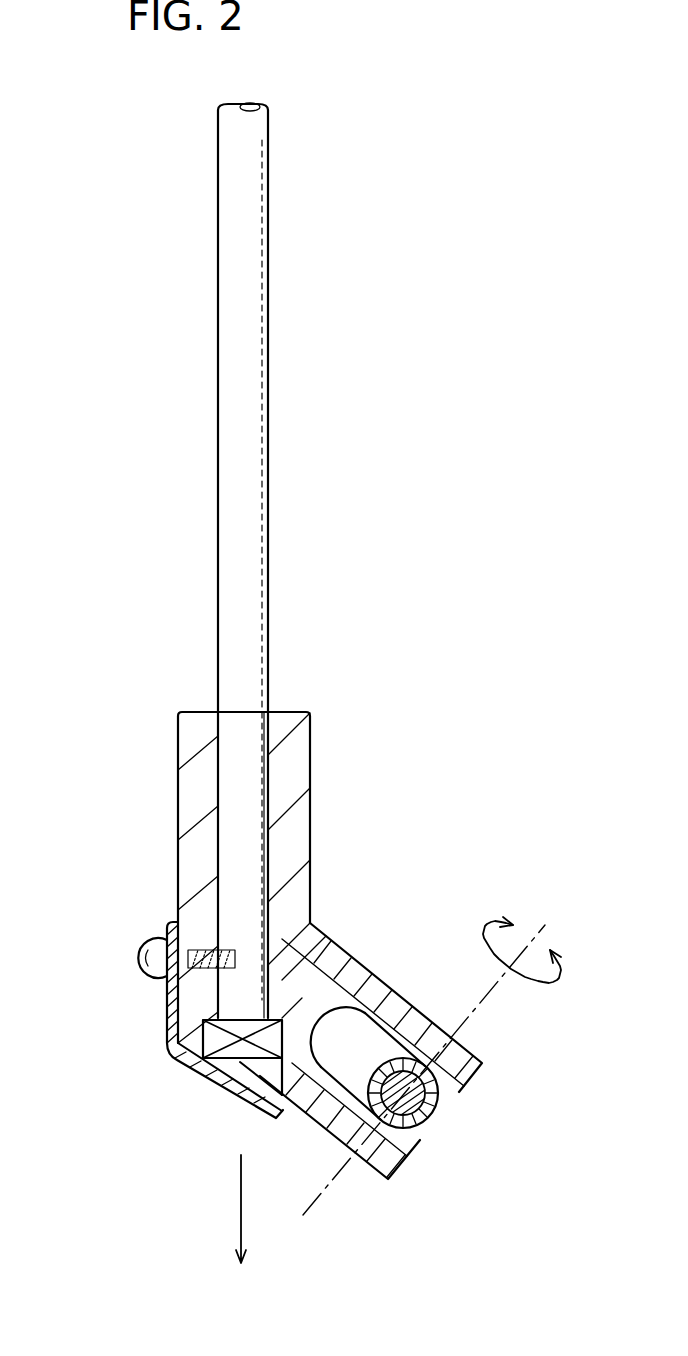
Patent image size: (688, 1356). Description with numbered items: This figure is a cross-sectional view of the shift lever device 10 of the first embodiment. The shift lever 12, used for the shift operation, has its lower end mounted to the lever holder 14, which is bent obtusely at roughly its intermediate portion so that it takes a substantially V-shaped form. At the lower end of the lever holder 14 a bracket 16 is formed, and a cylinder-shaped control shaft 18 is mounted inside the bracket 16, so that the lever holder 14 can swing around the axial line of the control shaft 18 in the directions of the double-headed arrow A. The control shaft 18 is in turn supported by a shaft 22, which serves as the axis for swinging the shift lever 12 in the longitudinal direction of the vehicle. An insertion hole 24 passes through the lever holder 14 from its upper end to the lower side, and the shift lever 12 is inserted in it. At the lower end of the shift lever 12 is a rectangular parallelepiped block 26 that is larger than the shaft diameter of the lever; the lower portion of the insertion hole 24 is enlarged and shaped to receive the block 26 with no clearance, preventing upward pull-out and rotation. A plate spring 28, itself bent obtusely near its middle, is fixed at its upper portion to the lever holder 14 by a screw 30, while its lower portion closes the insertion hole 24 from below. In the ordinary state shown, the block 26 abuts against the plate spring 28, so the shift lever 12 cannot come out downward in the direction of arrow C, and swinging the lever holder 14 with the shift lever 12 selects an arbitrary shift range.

The shift lever device 10 is at (428, 517).
The shift lever 12 is at (228, 462).
The lever holder 14 is at (185, 858).
The bracket 16 is at (350, 1130).
The control shaft 18 is at (435, 1112).
The shaft 22 is at (413, 1128).
The insertion hole 24 is at (222, 757).
The block 26 is at (290, 1028).
The plate spring 28 is at (166, 1003).
The screw 30 is at (152, 937).
The double-headed arrow A is at (543, 988).
The arrow C is at (241, 1200).